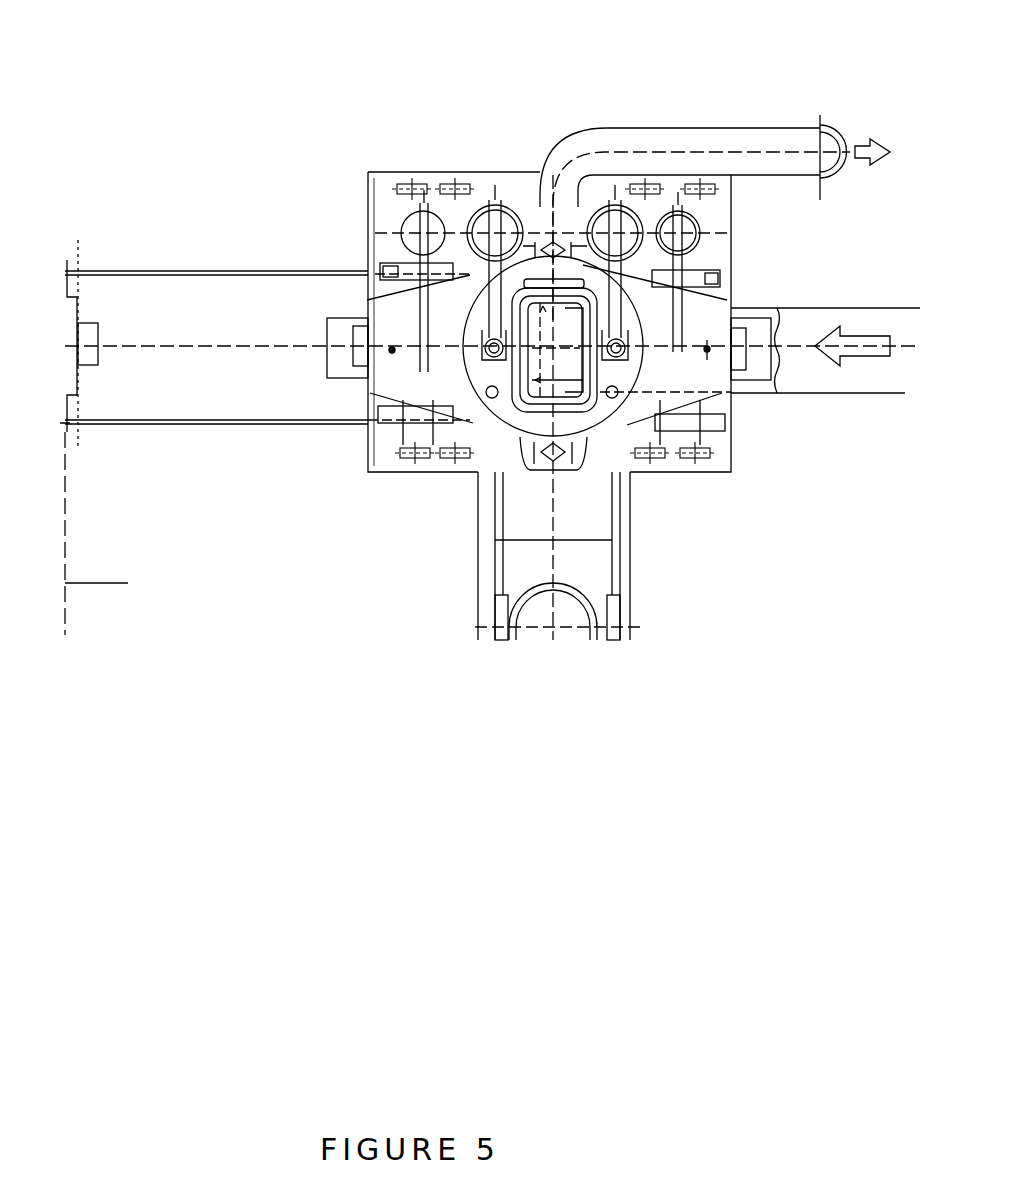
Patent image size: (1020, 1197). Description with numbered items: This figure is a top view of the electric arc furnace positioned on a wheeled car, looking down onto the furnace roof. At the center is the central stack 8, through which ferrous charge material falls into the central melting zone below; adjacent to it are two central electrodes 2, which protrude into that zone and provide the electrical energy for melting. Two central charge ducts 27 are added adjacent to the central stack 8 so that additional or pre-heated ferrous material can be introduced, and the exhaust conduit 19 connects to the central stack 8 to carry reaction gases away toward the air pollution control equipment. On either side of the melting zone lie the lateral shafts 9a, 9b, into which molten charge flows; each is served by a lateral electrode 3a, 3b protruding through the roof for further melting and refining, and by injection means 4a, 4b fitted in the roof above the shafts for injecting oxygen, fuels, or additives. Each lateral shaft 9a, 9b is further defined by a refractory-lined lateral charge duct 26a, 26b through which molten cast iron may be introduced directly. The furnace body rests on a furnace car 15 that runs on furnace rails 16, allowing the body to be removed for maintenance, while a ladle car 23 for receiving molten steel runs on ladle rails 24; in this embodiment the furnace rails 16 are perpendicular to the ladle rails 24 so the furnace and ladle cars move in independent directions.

The central electrodes 2 is at (490, 340).
The lateral electrode 3a is at (425, 345).
The lateral electrode 3b is at (681, 343).
The injection means 4a is at (390, 348).
The injection means 4b is at (714, 349).
The central stack 8 is at (506, 412).
The lateral shaft 9a is at (410, 368).
The lateral shaft 9b is at (701, 368).
The furnace car 15 is at (393, 282).
The furnace rails 16 is at (183, 276).
The exhaust conduit 19 is at (697, 139).
The ladle car 23 is at (592, 572).
The ladle rails 24 is at (602, 510).
The lateral charge duct 26a is at (377, 428).
The lateral charge duct 26b is at (721, 434).
The central charge ducts 27 is at (489, 398).